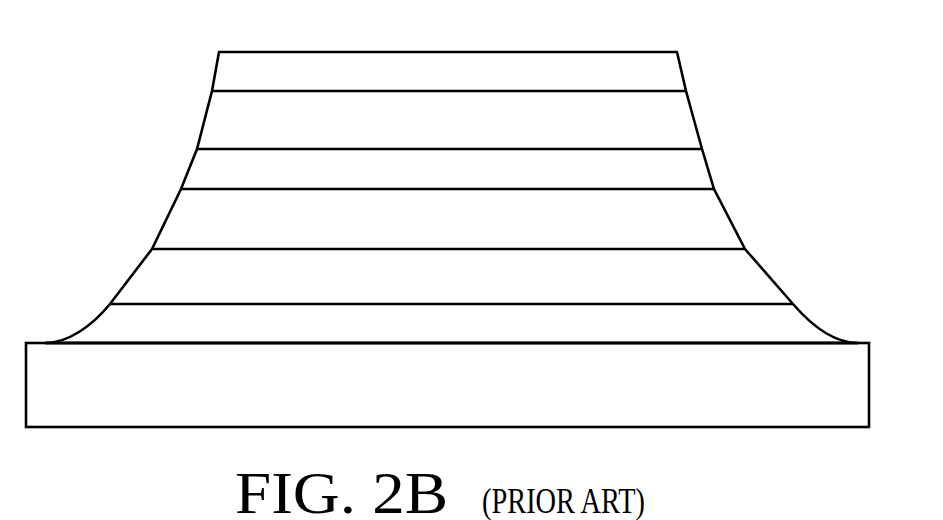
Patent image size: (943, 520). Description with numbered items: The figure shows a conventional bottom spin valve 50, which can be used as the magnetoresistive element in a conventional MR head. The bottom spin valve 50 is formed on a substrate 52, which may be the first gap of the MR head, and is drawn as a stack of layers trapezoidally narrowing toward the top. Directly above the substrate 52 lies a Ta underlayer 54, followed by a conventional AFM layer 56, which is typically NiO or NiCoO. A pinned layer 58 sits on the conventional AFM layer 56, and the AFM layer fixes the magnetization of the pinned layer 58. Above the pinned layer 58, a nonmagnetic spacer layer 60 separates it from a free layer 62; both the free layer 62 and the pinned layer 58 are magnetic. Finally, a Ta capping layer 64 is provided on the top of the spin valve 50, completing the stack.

The conventional bottom spin valve 50 is at (444, 28).
The substrate 52 is at (160, 428).
The Ta underlayer 54 is at (805, 323).
The conventional AFM layer 56 is at (150, 275).
The pinned layer 58 is at (717, 216).
The nonmagnetic spacer layer 60 is at (195, 165).
The free layer 62 is at (681, 115).
The Ta capping layer 64 is at (220, 68).